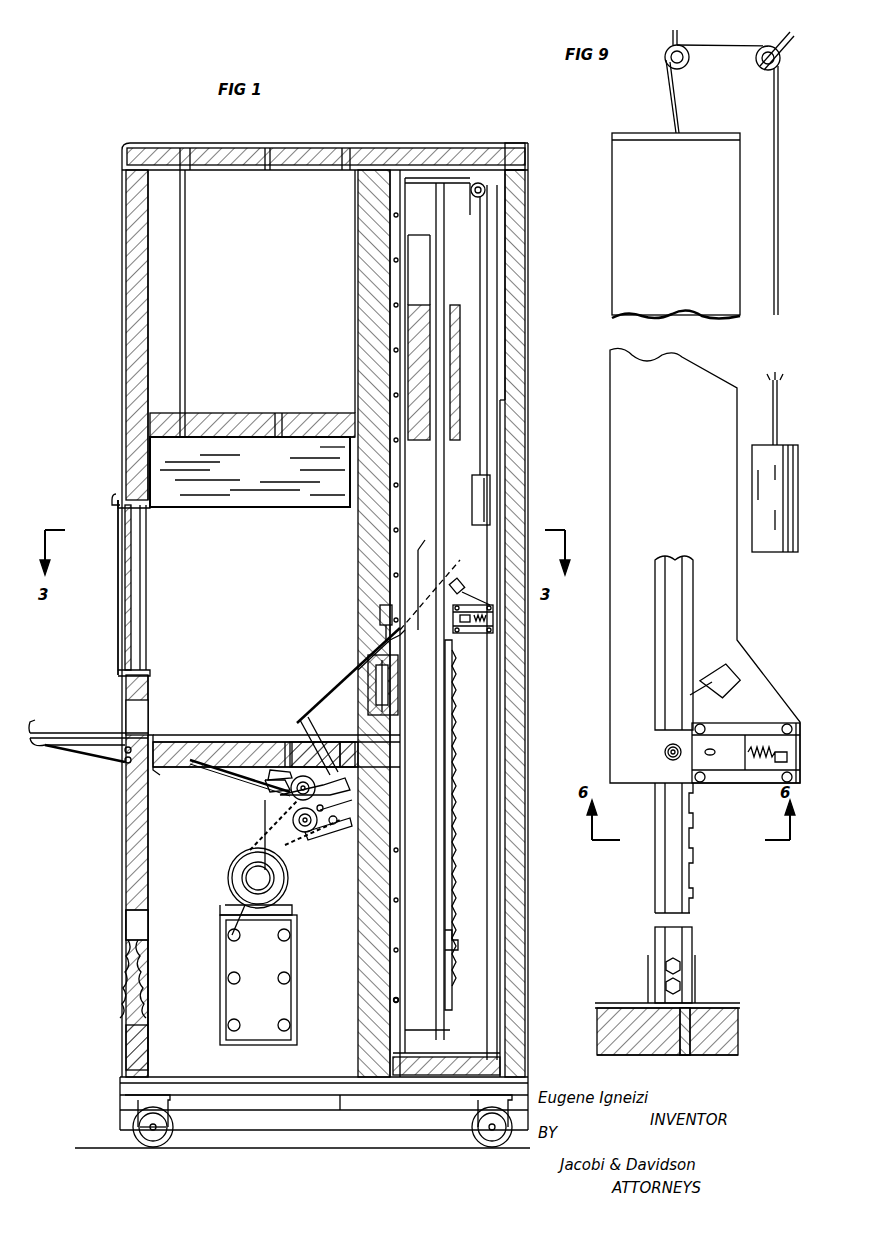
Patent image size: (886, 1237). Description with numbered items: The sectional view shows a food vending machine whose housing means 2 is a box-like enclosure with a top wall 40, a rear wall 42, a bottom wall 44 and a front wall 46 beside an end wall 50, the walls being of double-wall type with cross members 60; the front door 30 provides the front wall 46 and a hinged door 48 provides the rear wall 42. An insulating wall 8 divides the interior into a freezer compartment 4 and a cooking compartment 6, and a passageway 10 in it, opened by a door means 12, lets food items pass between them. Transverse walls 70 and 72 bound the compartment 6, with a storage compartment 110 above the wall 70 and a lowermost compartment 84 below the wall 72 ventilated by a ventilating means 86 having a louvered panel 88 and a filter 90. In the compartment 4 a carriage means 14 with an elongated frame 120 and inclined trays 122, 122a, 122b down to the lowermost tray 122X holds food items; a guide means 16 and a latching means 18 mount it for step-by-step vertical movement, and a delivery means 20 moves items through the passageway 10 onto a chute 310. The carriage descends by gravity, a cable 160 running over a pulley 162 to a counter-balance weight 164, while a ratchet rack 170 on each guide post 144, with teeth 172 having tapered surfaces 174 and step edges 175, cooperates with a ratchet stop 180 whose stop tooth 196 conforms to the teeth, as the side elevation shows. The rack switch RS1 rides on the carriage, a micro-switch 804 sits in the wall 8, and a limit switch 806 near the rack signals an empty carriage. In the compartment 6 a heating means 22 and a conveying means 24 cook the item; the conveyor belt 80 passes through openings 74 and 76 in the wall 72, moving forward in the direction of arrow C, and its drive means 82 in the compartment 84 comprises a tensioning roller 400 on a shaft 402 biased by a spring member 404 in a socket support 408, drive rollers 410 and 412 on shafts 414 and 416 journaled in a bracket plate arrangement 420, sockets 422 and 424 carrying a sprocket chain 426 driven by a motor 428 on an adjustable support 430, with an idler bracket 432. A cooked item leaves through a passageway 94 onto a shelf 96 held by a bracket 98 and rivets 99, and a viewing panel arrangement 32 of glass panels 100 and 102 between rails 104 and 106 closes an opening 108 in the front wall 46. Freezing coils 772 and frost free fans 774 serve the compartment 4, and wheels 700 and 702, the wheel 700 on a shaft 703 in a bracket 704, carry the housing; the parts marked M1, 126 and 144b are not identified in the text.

In FIG. 1, the housing means 2 is at (482, 148).
In FIG. 1, the compartment 4 is at (490, 228).
In FIG. 1, the compartment 6 is at (257, 540).
In FIG. 1, the insulating wall 8 is at (372, 273).
In FIG. 1, the passageway 10 is at (358, 665).
In FIG. 1, the door means 12 is at (390, 668).
In FIG. 1, the carriage means 14 is at (470, 335).
In FIG. 9, the carriage means 14 is at (602, 130).
In FIG. 1, the guide means 16 is at (448, 1000).
In FIG. 1, the latching means 18 is at (468, 640).
In FIG. 1, the delivery means 20 is at (417, 598).
In FIG. 1, the heating means 22 is at (230, 455).
In FIG. 1, the conveying means 24 is at (238, 733).
In FIG. 1, the front door 30 is at (150, 140).
In FIG. 1, the viewing panel arrangement 32 is at (118, 597).
In FIG. 1, the top wall 40 is at (328, 148).
In FIG. 1, the rear wall 42 is at (506, 493).
In FIG. 1, the bottom wall 44 is at (302, 1112).
In FIG. 1, the front wall 46 is at (125, 375).
In FIG. 1, the door 48 is at (525, 143).
In FIG. 1, the end wall 50 is at (270, 291).
In FIG. 1, the cross members 60 is at (282, 170).
In FIG. 1, the transverse wall 70 is at (308, 425).
In FIG. 1, the transverse wall 72 is at (262, 745).
In FIG. 1, the opening 74 is at (325, 730).
In FIG. 1, the opening 76 is at (155, 775).
In FIG. 1, the conveyor belt 80 is at (208, 742).
In FIG. 1, the drive means 82 is at (250, 828).
In FIG. 1, the lowermost compartment 84 is at (195, 950).
In FIG. 1, the ventilating means 86 is at (120, 1000).
In FIG. 1, the louvered panel 88 is at (126, 920).
In FIG. 1, the filter 90 is at (140, 945).
In FIG. 1, the passageway 94 is at (118, 730).
In FIG. 1, the shelf 96 is at (60, 745).
In FIG. 1, the bracket 98 is at (75, 752).
In FIG. 1, the rivets 99 is at (125, 763).
In FIG. 1, the glass panel 100 is at (128, 560).
In FIG. 1, the glass panel 102 is at (150, 568).
In FIG. 1, the bottom support rail 104 is at (150, 668).
In FIG. 1, the top support rail 106 is at (130, 505).
In FIG. 1, the opening 108 is at (120, 500).
In FIG. 1, the storage compartment 110 is at (220, 190).
In FIG. 1, the elongated frame 120 is at (468, 265).
In FIG. 1, the inclined tray 122 is at (425, 440).
In FIG. 1, the inclined tray 122a is at (412, 448).
In FIG. 1, the inclined tray 122b is at (410, 420).
In FIG. 1, the lowermost tray 122X is at (440, 565).
In FIG. 1, the guide post 144 is at (438, 200).
In FIG. 1, the cable 160 is at (490, 280).
In FIG. 1, the pulley 162 is at (484, 190).
In FIG. 1, the counter-balance weight 164 is at (490, 508).
In FIG. 1, the ratchet rack 170 is at (458, 815).
In FIG. 1, the chute 310 is at (335, 688).
In FIG. 1, the tensioning roller 400 is at (265, 788).
In FIG. 1, the shaft 402 is at (268, 775).
In FIG. 1, the spring member 404 is at (265, 800).
In FIG. 1, the socket support 408 is at (290, 760).
In FIG. 1, the drive roller 410 is at (322, 750).
In FIG. 1, the drive roller 412 is at (312, 835).
In FIG. 1, the shaft 414 is at (330, 782).
In FIG. 1, the shaft 416 is at (330, 830).
In FIG. 1, the shaft bracket plate arrangement 420 is at (338, 826).
In FIG. 1, the socket 422 is at (310, 836).
In FIG. 1, the socket 424 is at (272, 880).
In FIG. 1, the sprocket chain 426 is at (260, 855).
In FIG. 1, the motor 428 is at (228, 925).
In FIG. 1, the adjustable support 430 is at (340, 812).
In FIG. 1, the bracket 432 is at (330, 816).
In FIG. 1, the wheel 700 is at (150, 1148).
In FIG. 1, the wheel 702 is at (496, 1148).
In FIG. 1, the shaft 703 is at (170, 1125).
In FIG. 1, the bracket 704 is at (140, 1105).
In FIG. 1, the freezing coils 772 is at (392, 1001).
In FIG. 1, the frost free fans 774 is at (420, 1030).
In FIG. 1, the switch 804 is at (384, 605).
In FIG. 1, the switch 806 is at (458, 940).
In FIG. 1, the rack switch RS1 is at (460, 580).
In FIG. 1, the motor M1 is at (228, 880).
In FIG. 1, the arrow C is at (310, 712).
In FIG. 9, the lower door panel 126 is at (705, 565).
In FIG. 9, the guide rail 144b is at (652, 882).
In FIG. 9, the teeth 172 is at (698, 898).
In FIG. 9, the inclined outwardly tapered surface 174 is at (694, 836).
In FIG. 9, the step edge 175 is at (694, 826).
In FIG. 9, the ratchet stop 180 is at (722, 745).
In FIG. 9, the stop tooth 196 is at (665, 757).